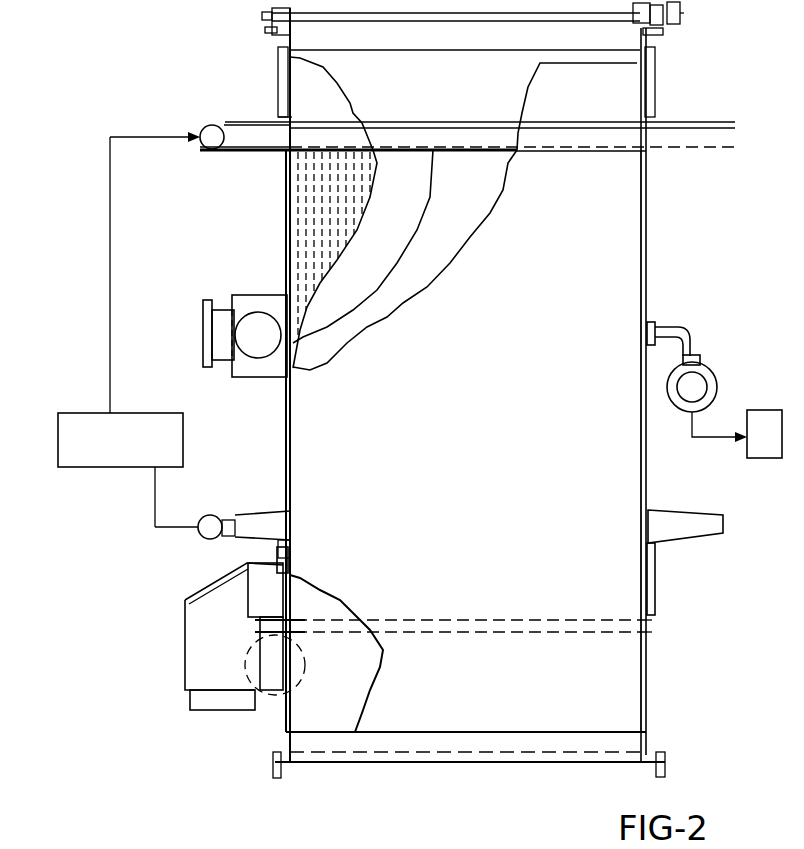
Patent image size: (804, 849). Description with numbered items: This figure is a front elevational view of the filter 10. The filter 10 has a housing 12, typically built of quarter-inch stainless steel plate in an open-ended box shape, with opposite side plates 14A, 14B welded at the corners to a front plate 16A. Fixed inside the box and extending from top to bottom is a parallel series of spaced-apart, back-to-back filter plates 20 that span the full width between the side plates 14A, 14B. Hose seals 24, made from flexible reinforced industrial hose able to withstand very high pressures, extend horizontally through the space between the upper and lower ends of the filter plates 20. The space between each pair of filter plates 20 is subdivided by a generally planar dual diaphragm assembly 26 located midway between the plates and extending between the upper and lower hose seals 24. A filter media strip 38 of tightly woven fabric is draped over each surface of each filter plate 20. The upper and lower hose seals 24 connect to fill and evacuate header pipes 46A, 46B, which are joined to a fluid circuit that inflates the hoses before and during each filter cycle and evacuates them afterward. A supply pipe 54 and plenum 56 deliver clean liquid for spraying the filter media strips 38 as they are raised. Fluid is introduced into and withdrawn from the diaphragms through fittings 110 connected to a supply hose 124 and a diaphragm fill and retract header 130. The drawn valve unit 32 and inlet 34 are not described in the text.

The filter 10 is at (195, 208).
The housing 12 is at (272, 433).
The side plate 14A is at (284, 470).
The side plate 14B is at (650, 488).
The front plate 16A is at (485, 411).
The filter plate 20 is at (345, 209).
The hose seal 24 is at (250, 518).
The dual diaphragm assembly 26 is at (477, 198).
The valve housing 32 is at (258, 293).
The inlet port 34 is at (222, 308).
The filter media strip 38 is at (358, 288).
The fill and evacuate header pipe 46A is at (258, 123).
The fill and evacuate header pipe 46B is at (203, 542).
The supply pipe 54 is at (258, 628).
The plenum 56 is at (243, 698).
The fitting 110 is at (650, 320).
The supply hose 124 is at (695, 327).
The diaphragm fill and retract header 130 is at (718, 386).